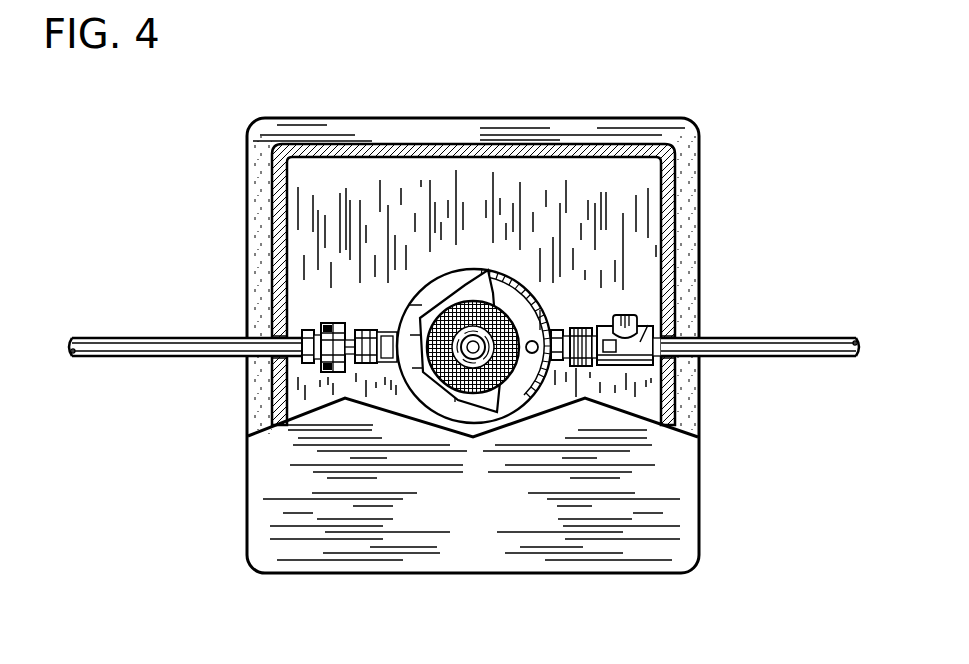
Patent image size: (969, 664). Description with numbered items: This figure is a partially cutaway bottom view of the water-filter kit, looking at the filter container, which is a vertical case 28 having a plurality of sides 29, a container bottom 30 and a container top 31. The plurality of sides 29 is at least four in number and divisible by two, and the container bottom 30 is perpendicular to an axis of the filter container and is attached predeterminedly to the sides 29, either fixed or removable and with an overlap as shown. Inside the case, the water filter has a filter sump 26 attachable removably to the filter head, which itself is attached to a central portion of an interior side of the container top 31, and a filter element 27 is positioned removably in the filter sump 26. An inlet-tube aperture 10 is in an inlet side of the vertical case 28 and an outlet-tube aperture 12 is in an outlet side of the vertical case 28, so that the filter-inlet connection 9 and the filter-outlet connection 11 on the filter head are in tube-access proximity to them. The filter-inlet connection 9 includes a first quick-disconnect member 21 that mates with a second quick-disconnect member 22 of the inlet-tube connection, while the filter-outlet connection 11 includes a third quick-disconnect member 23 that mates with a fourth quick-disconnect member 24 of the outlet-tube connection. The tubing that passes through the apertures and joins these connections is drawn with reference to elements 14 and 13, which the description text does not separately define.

The vertical case 28 is at (195, 130).
The sides 29 is at (385, 148).
The container top 31 is at (520, 203).
The container bottom 30 is at (375, 523).
The inlet tube 14 is at (212, 343).
The outlet-tube aperture 12 is at (270, 358).
The fourth quick-disconnect member 24 is at (310, 330).
The third quick-disconnect member 23 is at (335, 323).
The filter-outlet connection 11 is at (362, 328).
The filter element 27 is at (497, 410).
The filter sump 26 is at (440, 403).
The filter-inlet connection 9 is at (568, 326).
The first quick-disconnect member 21 is at (580, 326).
The second quick-disconnect member 22 is at (650, 325).
The outlet tube 13 is at (740, 343).
The inlet-tube aperture 10 is at (678, 360).